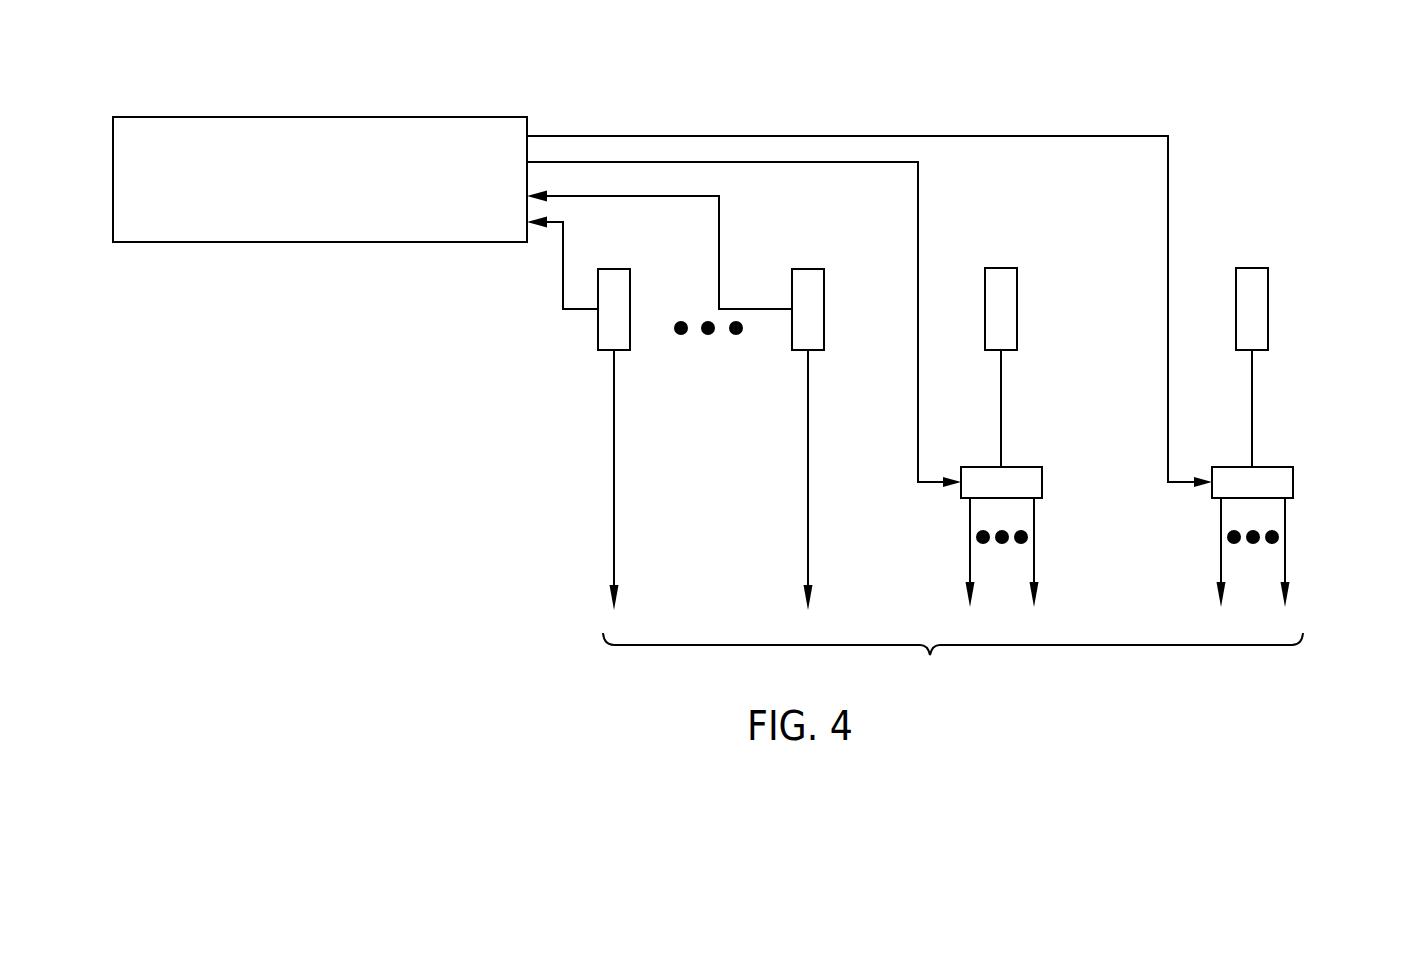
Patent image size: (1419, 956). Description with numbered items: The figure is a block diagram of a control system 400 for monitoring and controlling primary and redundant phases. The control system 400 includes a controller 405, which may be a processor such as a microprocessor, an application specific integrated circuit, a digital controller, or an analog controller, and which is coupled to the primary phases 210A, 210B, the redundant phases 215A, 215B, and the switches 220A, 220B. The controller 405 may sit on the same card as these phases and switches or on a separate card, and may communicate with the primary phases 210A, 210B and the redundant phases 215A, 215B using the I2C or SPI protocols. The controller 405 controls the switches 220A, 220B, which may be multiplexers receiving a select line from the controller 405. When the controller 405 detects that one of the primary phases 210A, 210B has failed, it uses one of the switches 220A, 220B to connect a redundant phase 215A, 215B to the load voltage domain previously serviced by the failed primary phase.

The control system 400 is at (234, 47).
The controller 405 is at (478, 197).
The primary phase 210A is at (598, 333).
The primary phase 210B is at (792, 338).
The redundant phase 215A is at (1003, 268).
The redundant phase 215B is at (1254, 268).
The switch 220A is at (1042, 477).
The switch 220B is at (1293, 477).